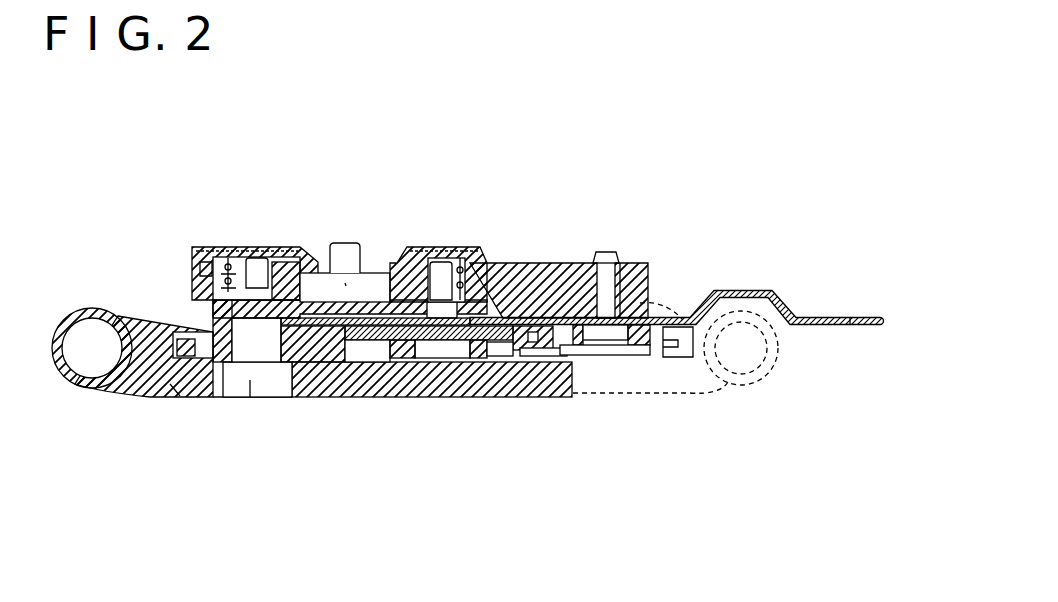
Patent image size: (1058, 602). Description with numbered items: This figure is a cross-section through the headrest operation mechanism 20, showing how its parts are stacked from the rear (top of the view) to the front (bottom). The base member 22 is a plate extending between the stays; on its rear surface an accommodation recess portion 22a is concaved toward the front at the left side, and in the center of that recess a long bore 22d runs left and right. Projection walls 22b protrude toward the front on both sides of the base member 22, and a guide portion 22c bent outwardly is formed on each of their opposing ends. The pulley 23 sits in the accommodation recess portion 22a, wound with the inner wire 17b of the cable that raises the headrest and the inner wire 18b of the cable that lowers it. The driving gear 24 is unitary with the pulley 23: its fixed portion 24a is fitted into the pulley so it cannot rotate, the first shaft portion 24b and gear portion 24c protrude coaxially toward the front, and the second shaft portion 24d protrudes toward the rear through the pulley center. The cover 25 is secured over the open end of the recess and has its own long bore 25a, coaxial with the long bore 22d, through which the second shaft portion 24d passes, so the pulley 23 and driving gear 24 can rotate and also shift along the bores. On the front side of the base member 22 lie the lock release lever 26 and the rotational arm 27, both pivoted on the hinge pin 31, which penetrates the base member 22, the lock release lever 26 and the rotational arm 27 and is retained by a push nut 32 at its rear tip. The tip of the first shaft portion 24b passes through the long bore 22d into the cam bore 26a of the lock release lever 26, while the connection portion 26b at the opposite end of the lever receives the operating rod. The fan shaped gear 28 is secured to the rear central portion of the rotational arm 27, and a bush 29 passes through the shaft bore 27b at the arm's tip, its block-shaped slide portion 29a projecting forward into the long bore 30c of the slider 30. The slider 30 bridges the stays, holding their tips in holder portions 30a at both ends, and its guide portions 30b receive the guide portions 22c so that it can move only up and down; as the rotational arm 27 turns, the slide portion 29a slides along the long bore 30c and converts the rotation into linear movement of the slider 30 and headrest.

The inner wire 17b is at (222, 268).
The inner wire 18b is at (463, 247).
The headrest operation mechanism 20 is at (646, 179).
The base member 22 is at (548, 268).
The accommodation recess portion 22a is at (205, 247).
The projection wall 22b is at (215, 380).
The guide portion 22c is at (172, 385).
The long bore 22d is at (398, 270).
The pulley 23 is at (286, 255).
The driving gear 24 is at (368, 330).
The fixed portion 24a is at (353, 250).
The first shaft portion 24b is at (400, 358).
The gear portion 24c is at (330, 345).
The second shaft portion 24d is at (345, 283).
The cover 25 is at (238, 248).
The long bore 25a is at (313, 260).
The lock release lever 26 is at (762, 291).
The cam bore 26a is at (293, 397).
The connection portion 26b is at (850, 325).
The rotational arm 27 is at (497, 357).
The shaft bore 27b is at (220, 330).
The fan shaped gear 28 is at (440, 358).
The bush 29 is at (237, 397).
The slide portion 29a is at (252, 400).
The slider 30 is at (520, 398).
The holder portion 30a is at (62, 388).
The guide portion 30b is at (180, 330).
The long bore 30c is at (365, 362).
The hinge pin 31 is at (604, 252).
The push nut 32 is at (628, 265).